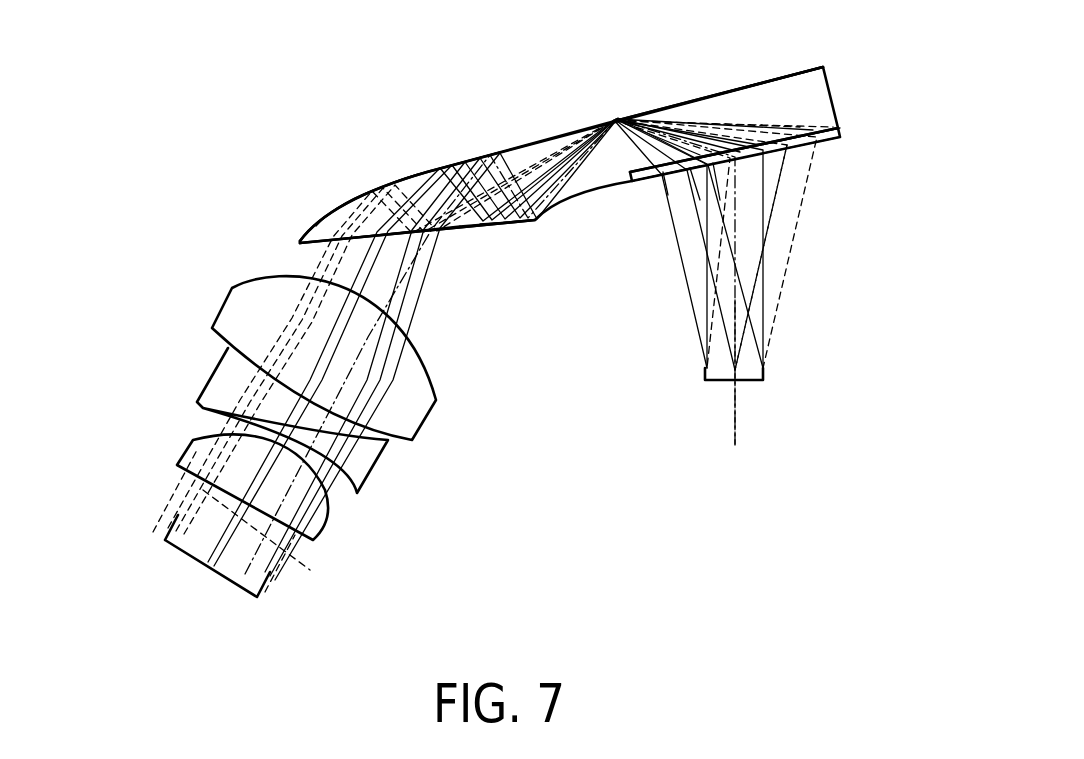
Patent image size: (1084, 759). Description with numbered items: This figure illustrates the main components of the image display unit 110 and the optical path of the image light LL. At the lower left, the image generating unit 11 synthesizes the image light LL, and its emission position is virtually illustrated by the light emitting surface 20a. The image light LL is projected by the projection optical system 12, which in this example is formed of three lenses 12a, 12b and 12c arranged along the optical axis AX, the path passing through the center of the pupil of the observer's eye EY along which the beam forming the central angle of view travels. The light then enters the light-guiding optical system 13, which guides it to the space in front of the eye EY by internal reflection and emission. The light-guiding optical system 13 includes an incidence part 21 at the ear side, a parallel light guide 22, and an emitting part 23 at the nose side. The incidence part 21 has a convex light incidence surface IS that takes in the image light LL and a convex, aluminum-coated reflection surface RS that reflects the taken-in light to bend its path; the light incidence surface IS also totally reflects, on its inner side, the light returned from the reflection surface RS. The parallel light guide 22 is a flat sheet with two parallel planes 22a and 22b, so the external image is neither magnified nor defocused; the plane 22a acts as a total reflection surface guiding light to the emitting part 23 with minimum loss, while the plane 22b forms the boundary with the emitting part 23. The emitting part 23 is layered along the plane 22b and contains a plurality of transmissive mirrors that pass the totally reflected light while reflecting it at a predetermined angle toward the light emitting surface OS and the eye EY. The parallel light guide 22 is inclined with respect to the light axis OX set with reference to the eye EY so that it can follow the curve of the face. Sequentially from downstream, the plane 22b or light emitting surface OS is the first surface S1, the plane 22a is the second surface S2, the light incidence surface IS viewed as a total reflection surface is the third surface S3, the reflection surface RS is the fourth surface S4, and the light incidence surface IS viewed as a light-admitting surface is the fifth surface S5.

The image display unit 110 is at (287, 86).
The light-guiding optical system 13 is at (513, 78).
The incidence part 21 is at (316, 218).
The parallel light guide 22 is at (742, 100).
The plane 22a is at (628, 117).
The plane 22b is at (628, 183).
The emitting part 23 is at (840, 131).
The image generating unit 11 is at (283, 568).
The projection optical system 12 is at (296, 417).
The lens 12a is at (412, 418).
The lens 12b is at (367, 463).
The lens 12c is at (312, 528).
The light emitting surface 20a is at (180, 550).
The reflection surface RS is at (380, 190).
The fourth surface S4 is at (423, 175).
The light incidence surface IS is at (440, 228).
The third surface S3 is at (480, 223).
The fifth surface S5 is at (507, 222).
The second surface S2 is at (730, 91).
The first surface S1 is at (643, 184).
The light emitting surface OS is at (800, 143).
The light axis OX is at (740, 273).
The image light LL is at (780, 315).
The eye EY is at (767, 370).
The optical axis AX is at (355, 338).